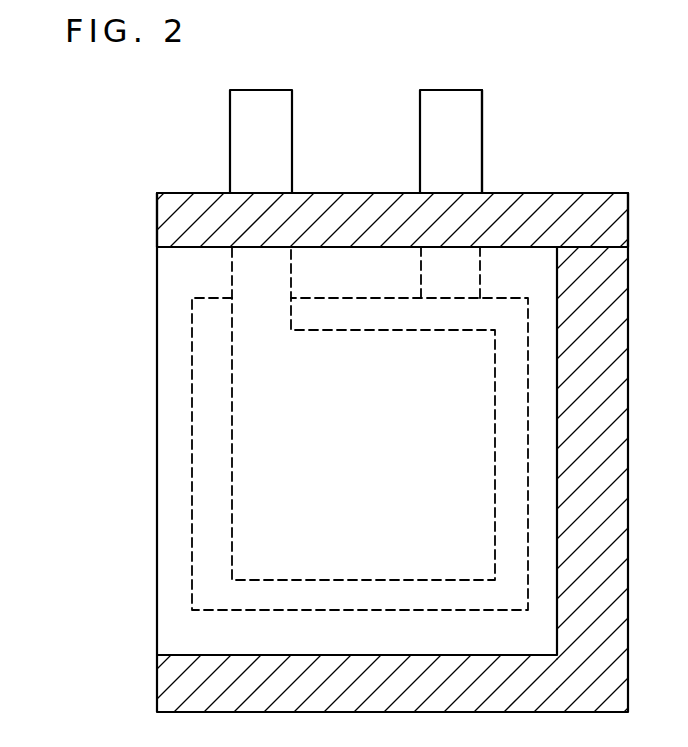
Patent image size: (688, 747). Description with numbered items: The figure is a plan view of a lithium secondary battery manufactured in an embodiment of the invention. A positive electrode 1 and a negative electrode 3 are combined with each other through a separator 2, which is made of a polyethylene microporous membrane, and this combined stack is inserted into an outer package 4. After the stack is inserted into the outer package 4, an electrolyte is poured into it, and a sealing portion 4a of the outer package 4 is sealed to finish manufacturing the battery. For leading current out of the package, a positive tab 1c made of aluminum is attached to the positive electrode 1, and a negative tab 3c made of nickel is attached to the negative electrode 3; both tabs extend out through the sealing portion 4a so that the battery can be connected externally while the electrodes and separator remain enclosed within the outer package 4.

The positive electrode 1 is at (236, 534).
The positive tab 1c is at (244, 132).
The separator 2 is at (191, 408).
The negative electrode 3 is at (484, 143).
The negative tab 3c is at (434, 132).
The outer package 4 is at (157, 306).
The sealing portion 4a is at (172, 223).